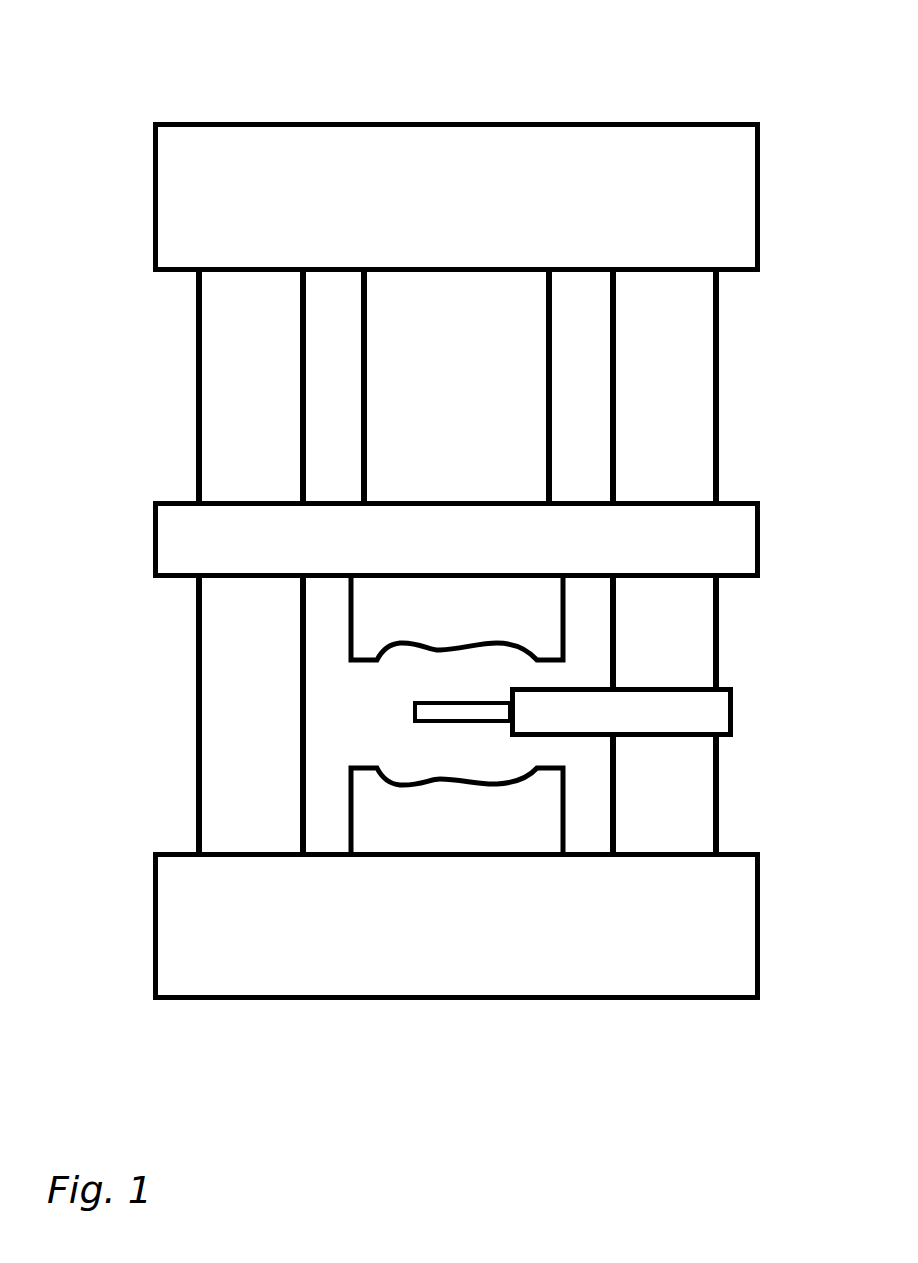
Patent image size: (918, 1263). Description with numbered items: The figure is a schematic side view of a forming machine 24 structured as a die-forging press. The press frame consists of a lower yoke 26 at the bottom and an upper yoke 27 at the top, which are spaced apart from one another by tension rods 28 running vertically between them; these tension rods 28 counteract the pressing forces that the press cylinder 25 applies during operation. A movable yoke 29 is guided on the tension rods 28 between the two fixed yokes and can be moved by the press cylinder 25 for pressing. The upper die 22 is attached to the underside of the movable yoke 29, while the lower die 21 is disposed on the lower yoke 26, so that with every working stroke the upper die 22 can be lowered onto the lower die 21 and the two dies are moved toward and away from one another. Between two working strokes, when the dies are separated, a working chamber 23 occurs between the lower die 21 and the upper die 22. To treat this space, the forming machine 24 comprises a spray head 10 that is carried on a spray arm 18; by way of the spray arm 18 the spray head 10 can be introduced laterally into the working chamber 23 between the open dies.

The forming machine 24 is at (735, 93).
The upper yoke 27 is at (708, 177).
The tension rods 28 is at (250, 394).
The press cylinder 25 is at (507, 435).
The movable yoke 29 is at (700, 537).
The upper die 22 is at (530, 620).
The spray head 10 is at (482, 698).
The spray arm 18 is at (688, 717).
The working chamber 23 is at (423, 769).
The lower die 21 is at (567, 817).
The lower yoke 26 is at (688, 903).